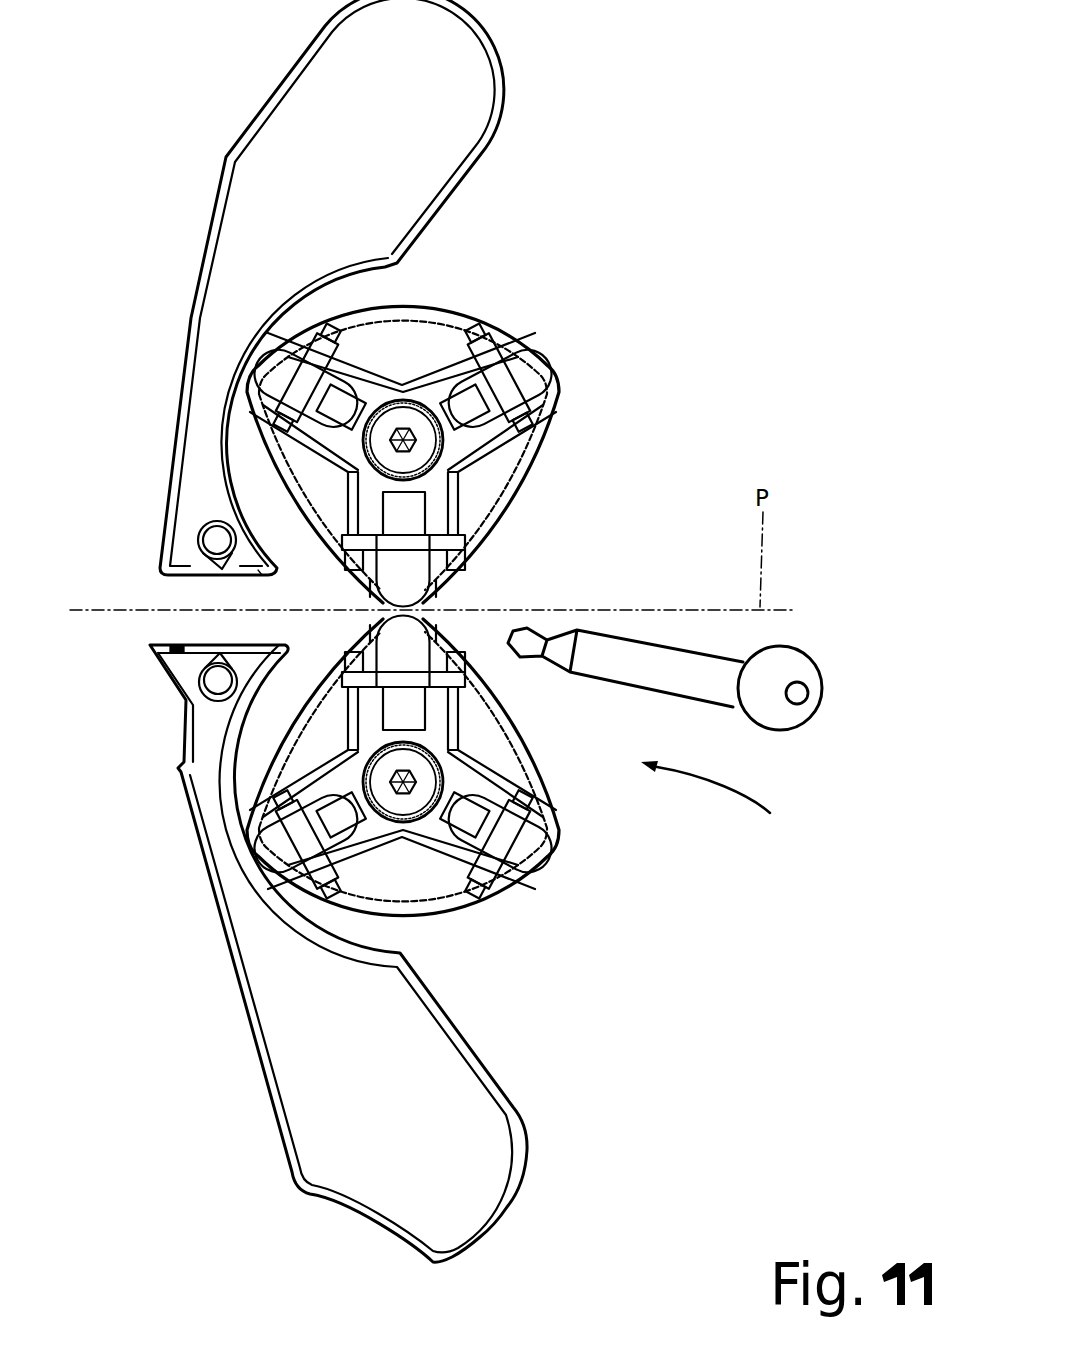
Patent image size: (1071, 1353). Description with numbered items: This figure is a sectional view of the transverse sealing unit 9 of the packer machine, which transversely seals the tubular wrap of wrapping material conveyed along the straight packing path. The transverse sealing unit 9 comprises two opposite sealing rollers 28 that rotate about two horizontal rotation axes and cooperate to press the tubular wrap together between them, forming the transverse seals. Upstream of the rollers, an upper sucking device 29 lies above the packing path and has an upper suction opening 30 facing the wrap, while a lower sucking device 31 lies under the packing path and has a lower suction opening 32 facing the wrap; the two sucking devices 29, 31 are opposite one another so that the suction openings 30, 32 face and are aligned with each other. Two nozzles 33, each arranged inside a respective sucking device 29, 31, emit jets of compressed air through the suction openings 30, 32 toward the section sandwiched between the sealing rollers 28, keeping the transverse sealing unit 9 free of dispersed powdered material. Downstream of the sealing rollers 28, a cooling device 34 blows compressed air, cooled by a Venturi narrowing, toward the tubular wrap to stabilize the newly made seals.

The transverse sealing unit 9 is at (717, 800).
The sealing rollers 28 is at (437, 418).
The upper sucking device 29 is at (272, 101).
The upper suction opening 30 is at (252, 575).
The lower sucking device 31 is at (503, 1086).
The lower suction opening 32 is at (172, 648).
The nozzles 33 is at (217, 543).
The cooling device 34 is at (693, 678).